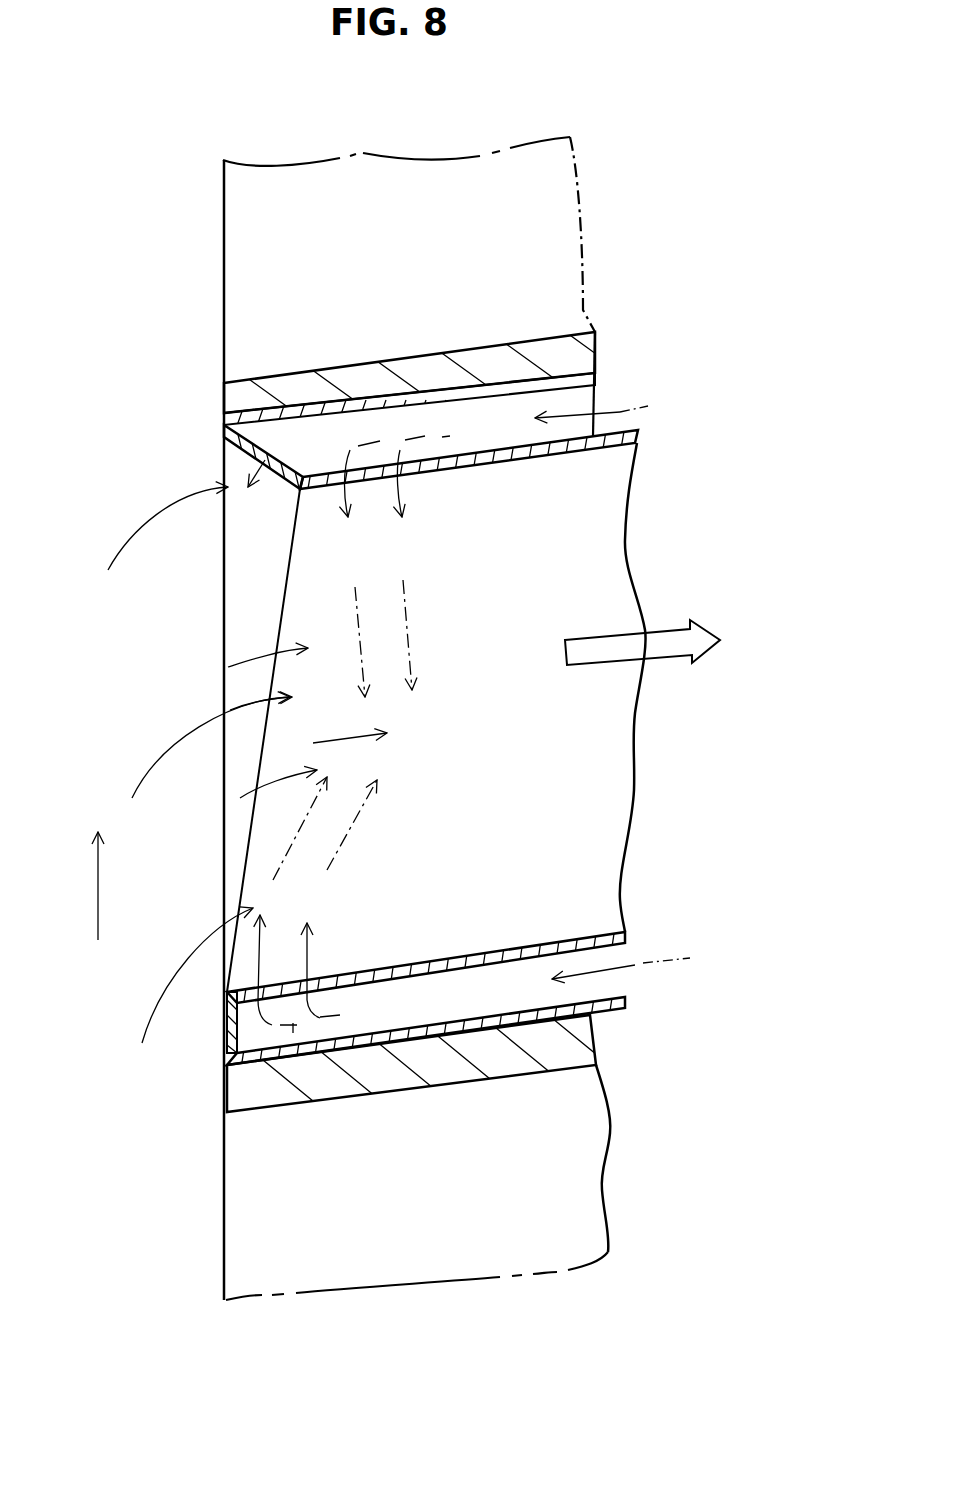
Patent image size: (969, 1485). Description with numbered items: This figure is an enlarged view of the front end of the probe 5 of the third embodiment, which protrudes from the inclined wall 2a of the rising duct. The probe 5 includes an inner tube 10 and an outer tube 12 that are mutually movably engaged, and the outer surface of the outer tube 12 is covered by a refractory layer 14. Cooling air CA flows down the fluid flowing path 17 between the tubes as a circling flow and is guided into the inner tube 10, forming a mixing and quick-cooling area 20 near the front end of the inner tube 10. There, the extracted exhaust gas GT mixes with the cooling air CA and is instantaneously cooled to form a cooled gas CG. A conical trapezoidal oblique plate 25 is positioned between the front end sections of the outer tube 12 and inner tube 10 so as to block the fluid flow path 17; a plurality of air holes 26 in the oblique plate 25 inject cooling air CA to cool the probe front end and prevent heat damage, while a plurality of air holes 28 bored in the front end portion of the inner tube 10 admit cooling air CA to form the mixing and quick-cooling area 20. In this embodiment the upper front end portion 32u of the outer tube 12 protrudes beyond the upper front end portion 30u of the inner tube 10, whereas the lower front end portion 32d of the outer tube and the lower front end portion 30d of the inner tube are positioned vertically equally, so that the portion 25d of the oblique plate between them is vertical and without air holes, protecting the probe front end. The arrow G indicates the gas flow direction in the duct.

The inclined wall 2a is at (222, 243).
The probe 5 is at (660, 437).
The inner tube 10 is at (628, 932).
The outer tube 12 is at (549, 1014).
The refractory layer 14 is at (528, 1064).
The fluid flowing path 17 is at (512, 408).
The mixing and quick-cooling area 20 is at (228, 668).
The oblique plate 25 is at (245, 447).
The portion of the oblique plate 25d is at (236, 1055).
The air holes 26 is at (298, 489).
The air holes 28 is at (370, 473).
The upper front end portion of the inner tube 30u is at (302, 492).
The lower front end portion of the inner tube 30d is at (237, 1000).
The upper front end portion of the outer tube 32u is at (228, 400).
The lower front end portion of the outer tube 32d is at (227, 1092).
The cooling air CA is at (313, 436).
The extracted exhaust gas GT is at (143, 525).
The gas flow direction G is at (98, 890).
The cooled gas CG is at (670, 662).